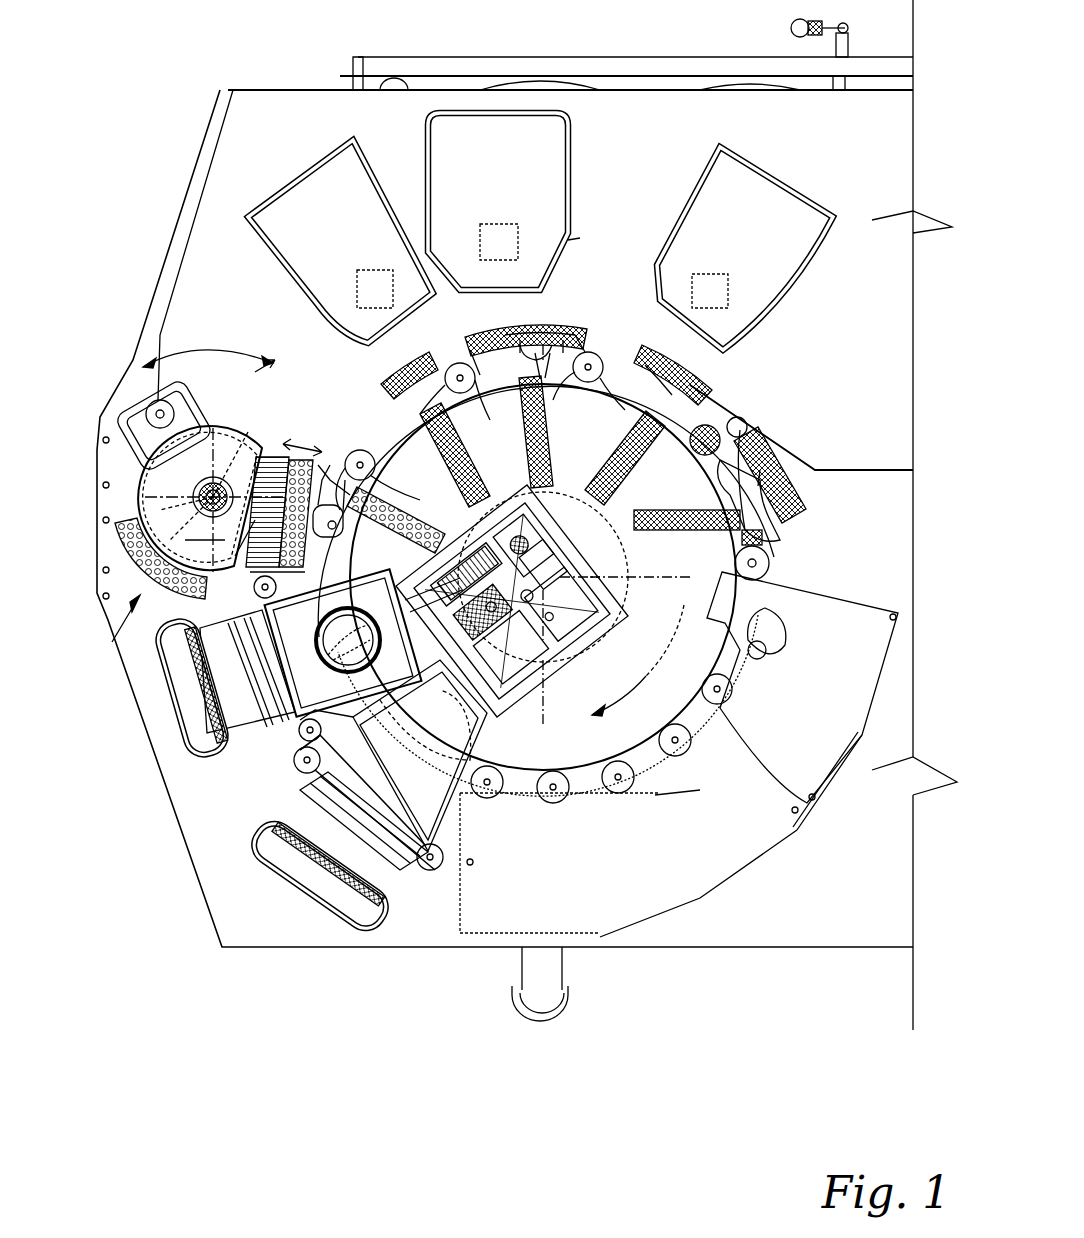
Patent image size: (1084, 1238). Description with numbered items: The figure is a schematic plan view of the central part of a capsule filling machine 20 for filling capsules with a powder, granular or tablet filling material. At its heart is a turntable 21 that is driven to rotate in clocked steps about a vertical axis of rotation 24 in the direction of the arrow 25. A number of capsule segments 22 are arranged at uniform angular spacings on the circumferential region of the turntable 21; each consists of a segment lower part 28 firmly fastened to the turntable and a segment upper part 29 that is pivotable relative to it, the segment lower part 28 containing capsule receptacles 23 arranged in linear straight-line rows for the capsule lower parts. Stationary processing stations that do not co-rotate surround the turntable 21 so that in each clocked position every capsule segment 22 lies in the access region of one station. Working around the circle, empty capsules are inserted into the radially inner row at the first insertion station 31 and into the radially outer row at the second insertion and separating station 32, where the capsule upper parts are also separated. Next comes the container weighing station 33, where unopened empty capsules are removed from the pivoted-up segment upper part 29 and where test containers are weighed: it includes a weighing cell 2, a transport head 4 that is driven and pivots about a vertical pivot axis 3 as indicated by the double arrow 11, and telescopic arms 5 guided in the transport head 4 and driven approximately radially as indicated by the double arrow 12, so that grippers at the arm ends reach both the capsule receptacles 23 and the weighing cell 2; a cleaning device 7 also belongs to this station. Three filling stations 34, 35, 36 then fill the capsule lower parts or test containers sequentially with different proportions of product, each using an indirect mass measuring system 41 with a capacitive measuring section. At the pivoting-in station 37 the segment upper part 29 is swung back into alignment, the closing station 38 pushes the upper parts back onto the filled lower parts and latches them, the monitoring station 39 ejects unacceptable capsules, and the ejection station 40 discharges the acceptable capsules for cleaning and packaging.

The capsule filling machine 20 is at (152, 200).
The double arrow 11 is at (205, 348).
The weighing cell 2 is at (130, 400).
The telescopic arm 5 is at (277, 452).
The double arrow 12 is at (305, 442).
The container weighing station 33 is at (200, 497).
The vertical pivot axis 3 is at (125, 522).
The transport head 4 is at (147, 562).
The cleaning device 7 is at (118, 629).
The first filling station 34 is at (364, 254).
The filling station 35 is at (492, 196).
The last filling station 36 is at (726, 248).
The indirect mass measuring system 41 is at (365, 300).
The pivoting-in station 37 is at (824, 443).
The segment lower part 28 is at (748, 428).
The segment upper part 29 is at (690, 510).
The capsule receptacle 23 is at (792, 490).
The capsule segment 22 is at (780, 533).
The vertical axis of rotation 24 is at (606, 626).
The arrow 25 is at (640, 672).
The turntable 21 is at (524, 746).
The second insertion and separating station 32 is at (309, 699).
The first insertion station 31 is at (409, 808).
The closing station 38 is at (801, 696).
The monitoring station 39 is at (684, 833).
The ejection station 40 is at (524, 884).